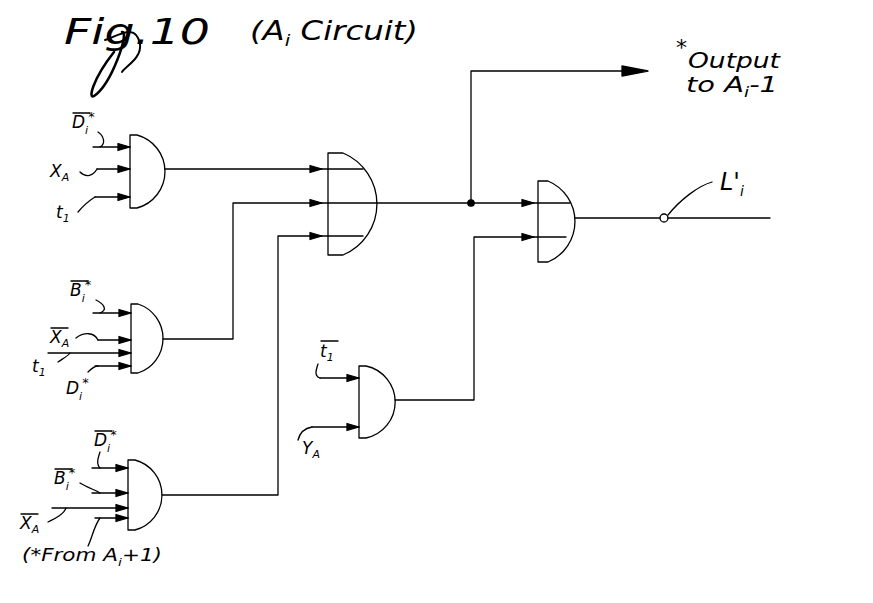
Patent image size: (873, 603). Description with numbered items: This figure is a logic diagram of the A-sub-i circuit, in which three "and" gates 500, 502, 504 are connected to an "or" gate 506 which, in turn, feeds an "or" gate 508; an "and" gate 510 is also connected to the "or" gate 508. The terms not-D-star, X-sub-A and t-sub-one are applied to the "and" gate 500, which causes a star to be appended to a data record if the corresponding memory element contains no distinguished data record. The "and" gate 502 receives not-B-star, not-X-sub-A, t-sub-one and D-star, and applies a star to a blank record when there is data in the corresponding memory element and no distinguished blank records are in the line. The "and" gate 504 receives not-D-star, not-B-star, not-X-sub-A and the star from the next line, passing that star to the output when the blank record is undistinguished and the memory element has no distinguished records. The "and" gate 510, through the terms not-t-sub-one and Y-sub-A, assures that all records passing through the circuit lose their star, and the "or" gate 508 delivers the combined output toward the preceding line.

The "and" gate 500 is at (150, 152).
The "and" gate 502 is at (155, 319).
The "and" gate 504 is at (150, 466).
The "or" gate 506 is at (350, 160).
The "or" gate 508 is at (562, 190).
The "and" gate 510 is at (386, 420).